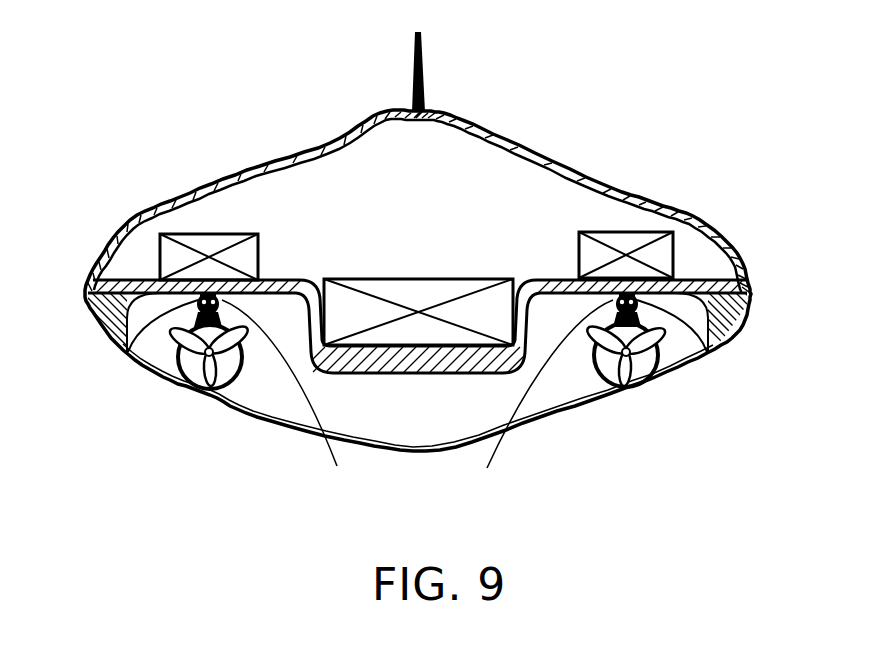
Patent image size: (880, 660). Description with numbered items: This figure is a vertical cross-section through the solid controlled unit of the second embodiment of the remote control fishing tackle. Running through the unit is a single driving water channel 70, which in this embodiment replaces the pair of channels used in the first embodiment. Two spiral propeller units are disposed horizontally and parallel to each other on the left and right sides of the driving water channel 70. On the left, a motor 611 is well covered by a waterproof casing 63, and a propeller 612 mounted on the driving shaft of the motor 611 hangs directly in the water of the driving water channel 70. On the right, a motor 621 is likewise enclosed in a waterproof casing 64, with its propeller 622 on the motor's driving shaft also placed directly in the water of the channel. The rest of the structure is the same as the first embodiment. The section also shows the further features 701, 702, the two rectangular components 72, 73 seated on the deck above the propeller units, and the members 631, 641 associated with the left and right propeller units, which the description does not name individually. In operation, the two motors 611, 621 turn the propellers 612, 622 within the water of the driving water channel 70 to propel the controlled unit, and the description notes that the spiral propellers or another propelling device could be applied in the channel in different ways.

The driving water channel 70 is at (400, 420).
The left air duct wall 701 is at (337, 466).
The right air duct wall 702 is at (487, 468).
The left battery/power unit 72 is at (203, 245).
The right battery/power unit 73 is at (629, 250).
The motor 611 is at (233, 360).
The propeller 612 is at (206, 387).
The waterproof casing 63 is at (172, 370).
The left support strut 631 is at (130, 352).
The motor 621 is at (603, 363).
The propeller 622 is at (636, 390).
The waterproof casing 64 is at (661, 360).
The right support strut 641 is at (693, 340).